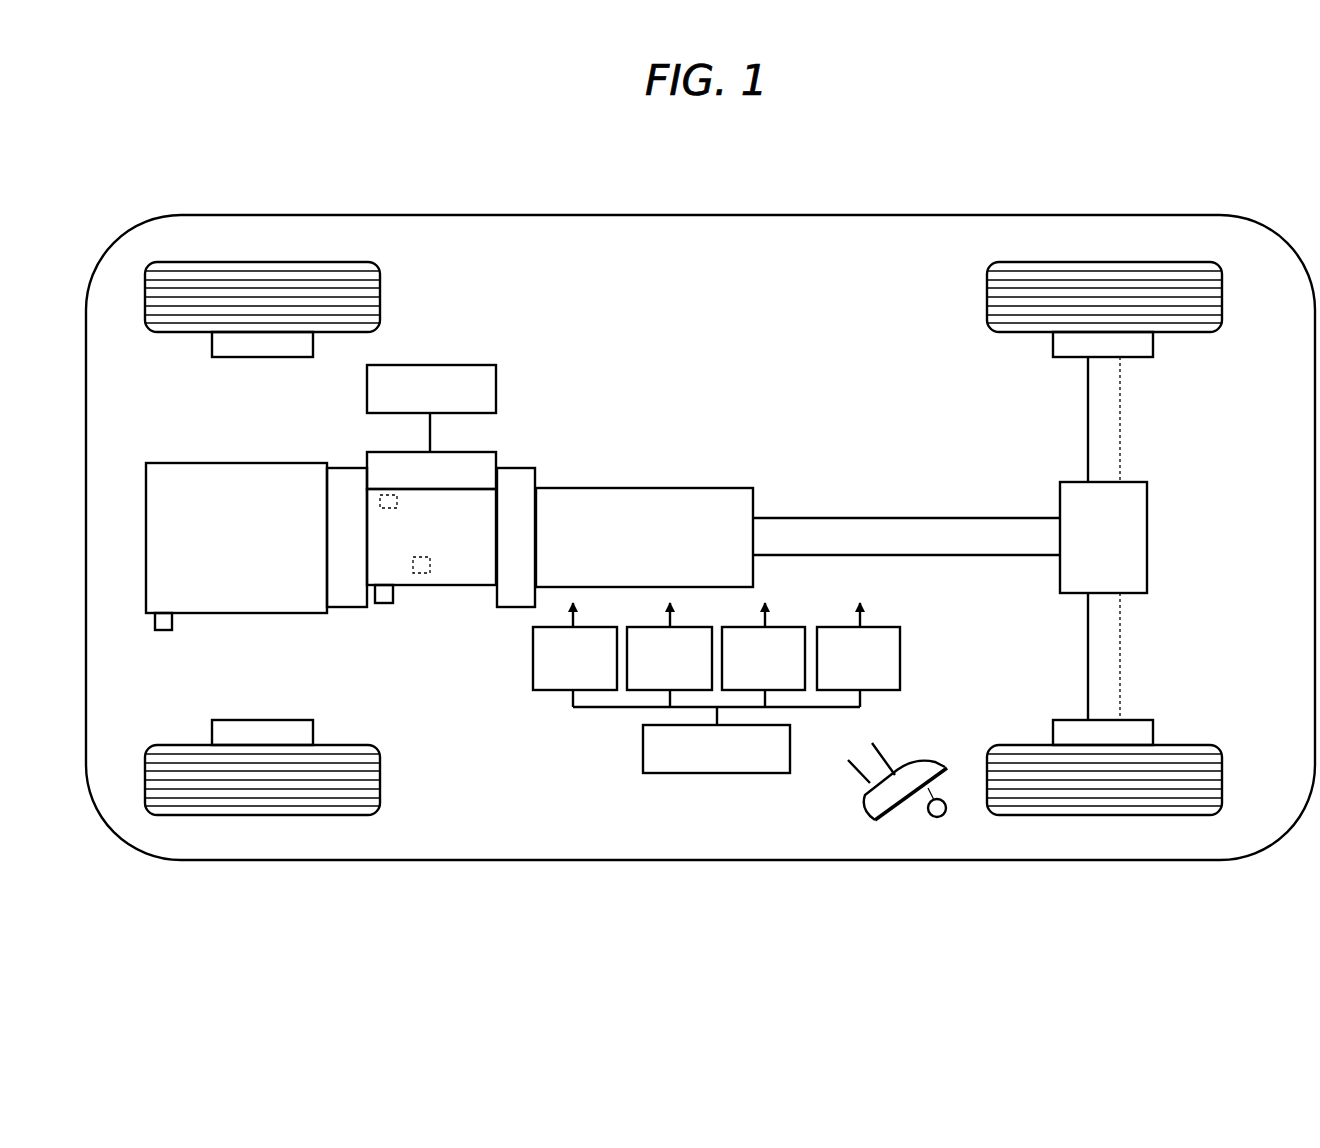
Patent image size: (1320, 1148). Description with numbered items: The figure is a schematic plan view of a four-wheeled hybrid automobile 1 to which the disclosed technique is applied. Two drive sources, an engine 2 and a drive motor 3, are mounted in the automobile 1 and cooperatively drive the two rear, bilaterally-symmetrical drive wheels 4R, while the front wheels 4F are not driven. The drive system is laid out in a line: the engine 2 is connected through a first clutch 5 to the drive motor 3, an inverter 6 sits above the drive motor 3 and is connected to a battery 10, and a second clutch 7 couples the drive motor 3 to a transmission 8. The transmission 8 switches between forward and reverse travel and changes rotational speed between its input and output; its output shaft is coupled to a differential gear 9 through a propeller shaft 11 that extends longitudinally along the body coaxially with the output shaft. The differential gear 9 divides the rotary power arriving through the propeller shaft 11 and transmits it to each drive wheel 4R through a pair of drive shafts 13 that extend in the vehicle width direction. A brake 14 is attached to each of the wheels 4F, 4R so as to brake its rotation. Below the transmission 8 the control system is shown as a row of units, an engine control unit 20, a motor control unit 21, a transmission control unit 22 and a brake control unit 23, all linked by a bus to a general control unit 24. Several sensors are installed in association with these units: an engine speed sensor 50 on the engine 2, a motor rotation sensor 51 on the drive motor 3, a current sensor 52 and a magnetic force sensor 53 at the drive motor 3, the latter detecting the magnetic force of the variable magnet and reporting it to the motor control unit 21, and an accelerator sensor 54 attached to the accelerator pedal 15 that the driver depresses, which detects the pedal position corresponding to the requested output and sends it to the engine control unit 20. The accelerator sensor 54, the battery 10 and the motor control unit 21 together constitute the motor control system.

The automobile 1 is at (978, 176).
The engine 2 is at (268, 475).
The drive motor 3 is at (475, 595).
The front wheels 4F is at (262, 264).
The drive wheels 4R is at (1143, 264).
The first clutch 5 is at (347, 598).
The inverter 6 is at (492, 460).
The second clutch 7 is at (535, 480).
The transmission 8 is at (718, 498).
The differential gear 9 is at (1130, 538).
The battery 10 is at (481, 380).
The propeller shaft 11 is at (893, 516).
The drive shafts 13 is at (1105, 425).
The brake 14 is at (218, 345).
The accelerator pedal 15 is at (900, 800).
The engine control unit 20 is at (543, 695).
The motor control unit 21 is at (641, 697).
The transmission control unit 22 is at (790, 625).
The brake control unit 23 is at (884, 625).
The general control unit 24 is at (765, 777).
The engine speed sensor 50 is at (172, 625).
The motor rotation sensor 51 is at (392, 601).
The current sensor 52 is at (375, 497).
The magnetic force sensor 53 is at (432, 570).
The accelerator sensor 54 is at (942, 800).